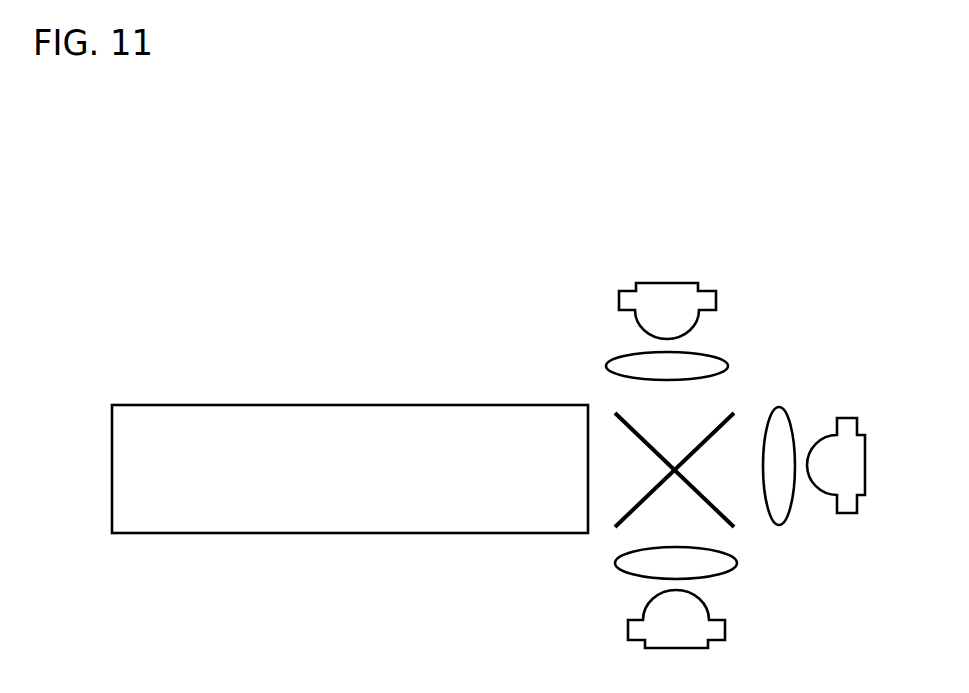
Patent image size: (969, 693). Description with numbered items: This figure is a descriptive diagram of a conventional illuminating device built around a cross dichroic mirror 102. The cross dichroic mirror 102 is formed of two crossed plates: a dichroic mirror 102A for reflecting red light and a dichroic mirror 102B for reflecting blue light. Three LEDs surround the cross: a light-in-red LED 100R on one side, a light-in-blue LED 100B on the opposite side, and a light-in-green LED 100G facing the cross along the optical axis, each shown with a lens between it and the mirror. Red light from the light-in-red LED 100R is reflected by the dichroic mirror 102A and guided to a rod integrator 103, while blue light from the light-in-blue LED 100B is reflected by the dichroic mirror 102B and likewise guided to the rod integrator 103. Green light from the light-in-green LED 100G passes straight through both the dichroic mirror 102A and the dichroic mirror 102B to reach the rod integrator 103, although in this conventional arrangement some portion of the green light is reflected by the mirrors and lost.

The rod integrator 103 is at (322, 523).
The light-in-red LED 100R is at (733, 290).
The light-in-green LED 100G is at (845, 398).
The light-in-blue LED 100B is at (603, 640).
The cross dichroic mirror 102 is at (717, 429).
The dichroic mirror 102A is at (713, 433).
The dichroic mirror 102B is at (638, 432).